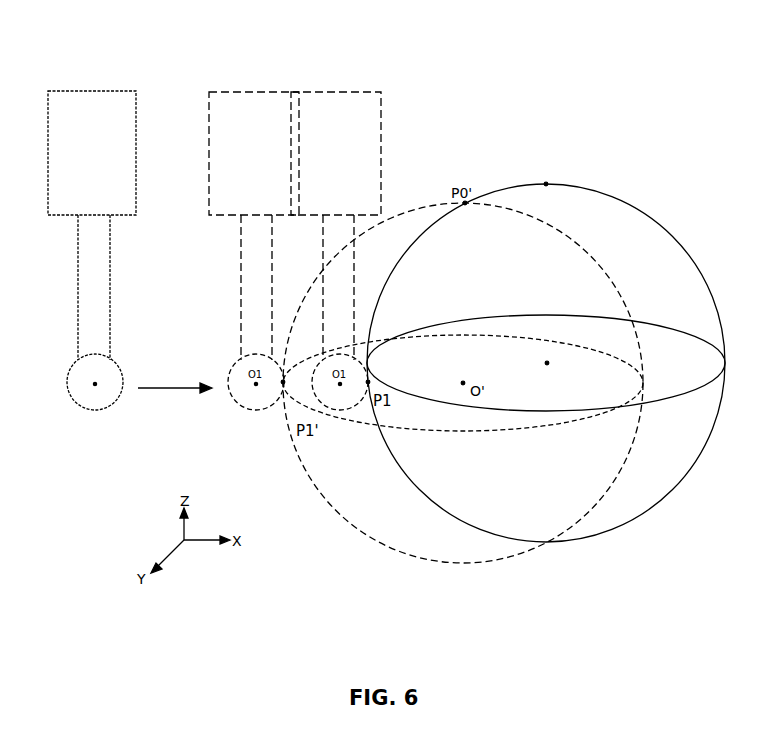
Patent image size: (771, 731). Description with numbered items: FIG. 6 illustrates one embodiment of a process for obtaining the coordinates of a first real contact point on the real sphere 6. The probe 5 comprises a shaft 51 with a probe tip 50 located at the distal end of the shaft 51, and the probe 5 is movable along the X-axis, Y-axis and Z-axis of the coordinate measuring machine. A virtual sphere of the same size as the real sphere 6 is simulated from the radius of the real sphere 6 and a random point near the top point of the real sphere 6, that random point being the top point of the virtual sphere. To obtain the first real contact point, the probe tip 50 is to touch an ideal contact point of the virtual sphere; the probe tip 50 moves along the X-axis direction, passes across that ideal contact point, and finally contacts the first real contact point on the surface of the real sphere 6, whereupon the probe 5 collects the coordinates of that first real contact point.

The probe 5 is at (103, 66).
The shaft 51 is at (98, 302).
The probe tip 50 is at (93, 410).
The real sphere 6 is at (620, 200).